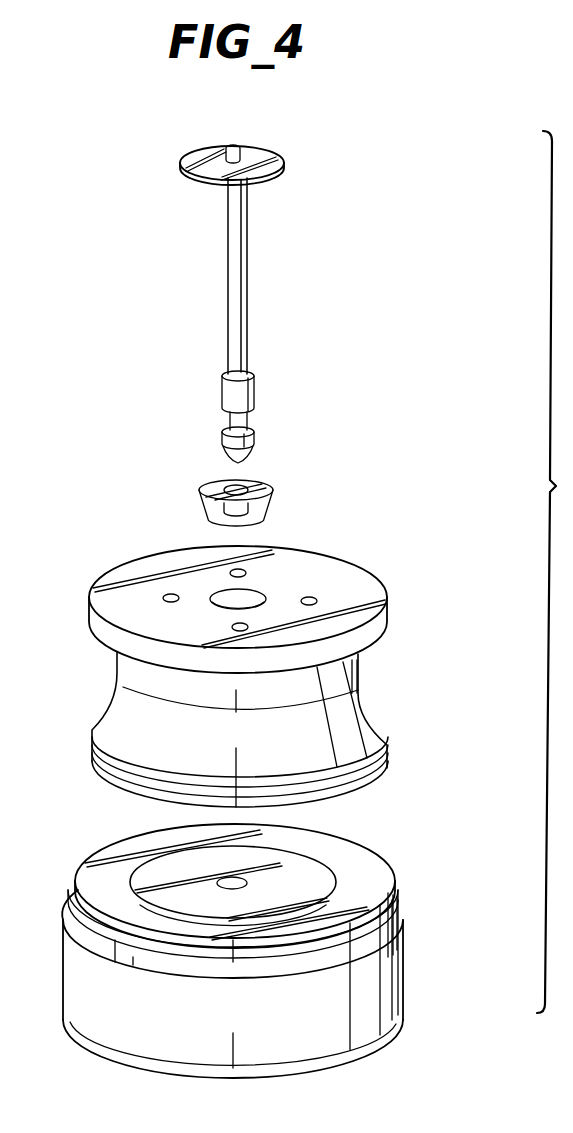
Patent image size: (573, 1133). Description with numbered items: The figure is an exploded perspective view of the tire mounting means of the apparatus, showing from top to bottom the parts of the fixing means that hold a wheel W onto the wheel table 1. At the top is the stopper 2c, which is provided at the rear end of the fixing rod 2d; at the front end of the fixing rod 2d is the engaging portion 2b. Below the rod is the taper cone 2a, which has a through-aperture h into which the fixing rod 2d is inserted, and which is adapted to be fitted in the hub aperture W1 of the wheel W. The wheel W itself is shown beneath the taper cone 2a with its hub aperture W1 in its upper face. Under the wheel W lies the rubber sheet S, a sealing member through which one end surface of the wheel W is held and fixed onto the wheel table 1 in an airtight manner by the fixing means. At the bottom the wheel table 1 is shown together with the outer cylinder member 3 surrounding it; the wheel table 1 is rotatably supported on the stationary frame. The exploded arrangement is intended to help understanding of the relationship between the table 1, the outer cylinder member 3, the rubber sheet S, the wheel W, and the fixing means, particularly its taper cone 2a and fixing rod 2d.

The stopper 2c is at (283, 157).
The fixing rod 2d is at (262, 285).
The engaging portion 2b is at (252, 440).
The taper cone 2a is at (262, 488).
The through-aperture h is at (250, 483).
The wheel W is at (257, 663).
The hub aperture W1 is at (258, 598).
The rubber sheet S is at (381, 875).
The wheel table 1 is at (103, 925).
The outer cylinder member 3 is at (399, 958).